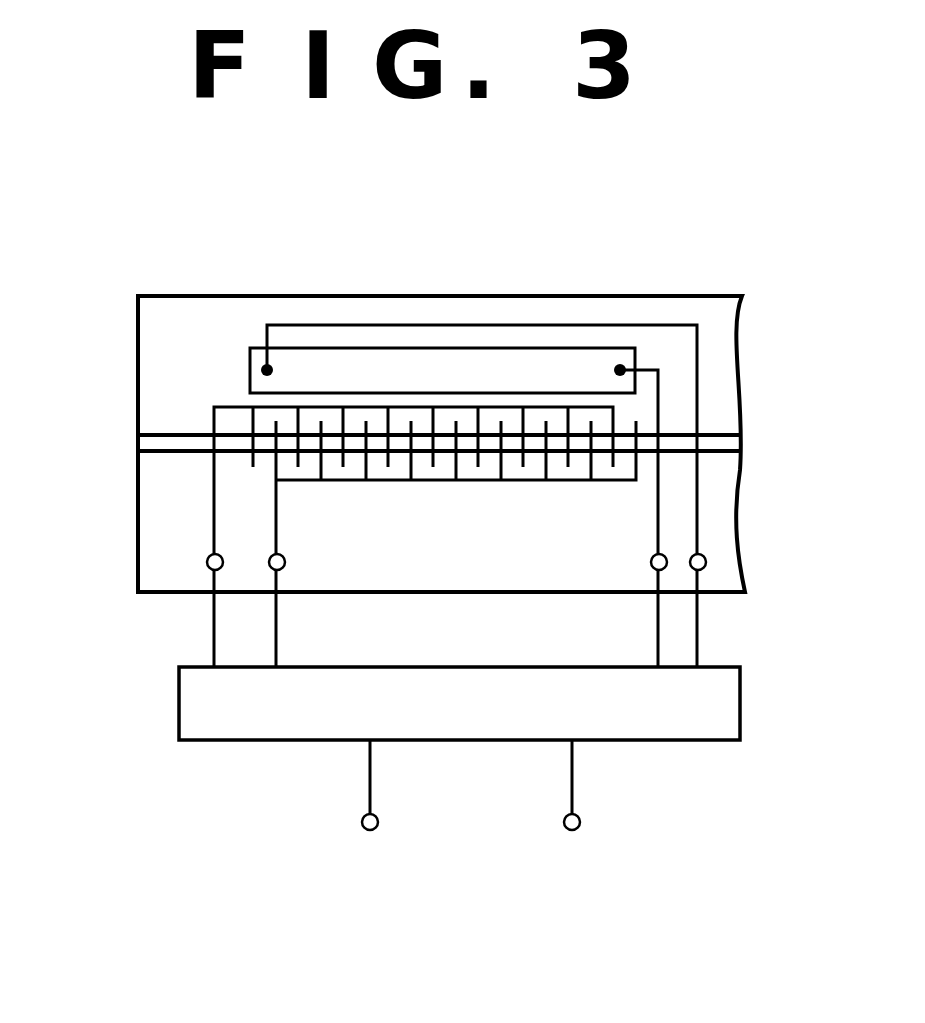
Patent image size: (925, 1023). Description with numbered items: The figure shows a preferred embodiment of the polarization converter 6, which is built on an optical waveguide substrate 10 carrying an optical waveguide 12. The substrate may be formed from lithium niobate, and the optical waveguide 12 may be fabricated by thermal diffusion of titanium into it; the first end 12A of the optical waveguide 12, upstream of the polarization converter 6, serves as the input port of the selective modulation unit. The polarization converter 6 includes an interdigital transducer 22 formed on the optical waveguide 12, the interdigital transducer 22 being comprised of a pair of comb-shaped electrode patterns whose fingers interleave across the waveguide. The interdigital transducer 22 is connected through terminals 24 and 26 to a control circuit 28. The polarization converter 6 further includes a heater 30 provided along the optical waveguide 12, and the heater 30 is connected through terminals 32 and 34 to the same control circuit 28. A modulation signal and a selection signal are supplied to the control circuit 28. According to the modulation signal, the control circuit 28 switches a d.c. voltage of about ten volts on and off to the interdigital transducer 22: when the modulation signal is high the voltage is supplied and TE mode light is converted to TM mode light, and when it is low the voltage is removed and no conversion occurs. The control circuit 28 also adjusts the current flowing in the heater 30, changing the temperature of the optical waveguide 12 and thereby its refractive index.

The polarization converter 6 is at (214, 360).
The optical waveguide substrate 10 is at (428, 296).
The optical waveguide 12 is at (167, 449).
The first end 12A is at (138, 437).
The interdigital transducer 22 is at (372, 486).
The terminal 24 is at (206, 562).
The terminal 26 is at (286, 562).
The control circuit 28 is at (690, 741).
The heater 30 is at (552, 357).
The terminal 32 is at (650, 560).
The terminal 34 is at (707, 560).